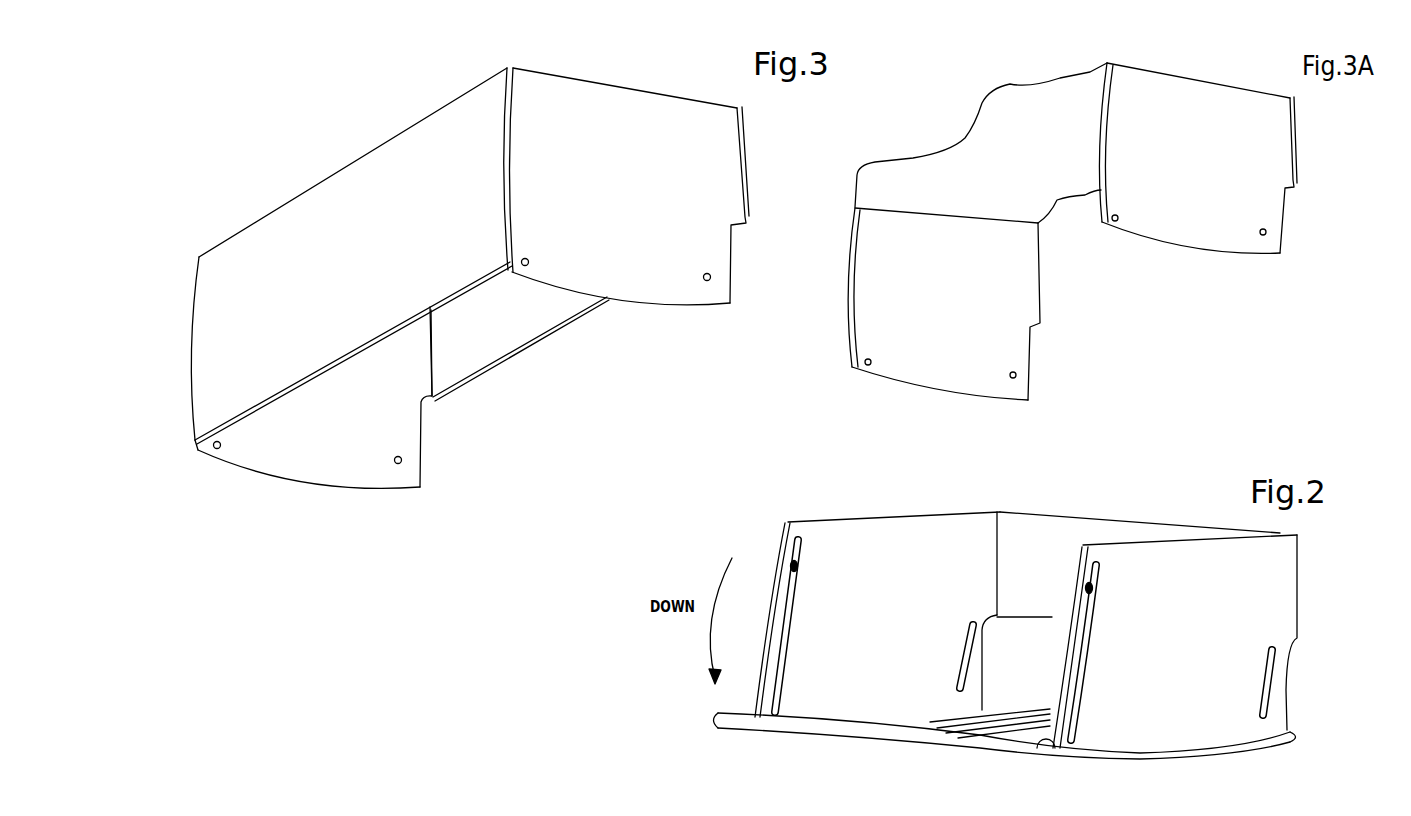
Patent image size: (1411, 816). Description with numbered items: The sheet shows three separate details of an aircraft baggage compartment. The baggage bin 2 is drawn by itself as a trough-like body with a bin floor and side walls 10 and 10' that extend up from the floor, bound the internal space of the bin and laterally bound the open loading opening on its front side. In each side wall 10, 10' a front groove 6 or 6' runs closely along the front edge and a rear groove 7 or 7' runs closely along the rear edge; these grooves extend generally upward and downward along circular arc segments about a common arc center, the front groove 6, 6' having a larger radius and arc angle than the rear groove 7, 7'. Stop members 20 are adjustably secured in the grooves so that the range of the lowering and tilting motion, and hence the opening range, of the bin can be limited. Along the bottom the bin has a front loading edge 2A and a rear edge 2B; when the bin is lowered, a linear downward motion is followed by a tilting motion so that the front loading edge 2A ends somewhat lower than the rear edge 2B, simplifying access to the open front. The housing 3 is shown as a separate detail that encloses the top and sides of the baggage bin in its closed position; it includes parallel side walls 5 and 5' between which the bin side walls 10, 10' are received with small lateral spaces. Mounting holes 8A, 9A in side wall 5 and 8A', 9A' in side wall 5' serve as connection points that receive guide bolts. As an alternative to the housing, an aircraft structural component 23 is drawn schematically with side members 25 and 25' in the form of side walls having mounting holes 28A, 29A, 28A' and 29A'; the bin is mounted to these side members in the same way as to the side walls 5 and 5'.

In FIG. 2, the baggage bin 2 is at (1138, 585).
In FIG. 2, the front loading edge 2A is at (937, 738).
In FIG. 2, the rear edge 2B is at (1293, 732).
In FIG. 3, the housing 3 is at (387, 178).
In FIG. 3, the side wall 5 is at (313, 399).
In FIG. 3, the side wall 5' is at (626, 186).
In FIG. 2, the front groove 6 is at (756, 592).
In FIG. 2, the front groove 6' is at (1098, 674).
In FIG. 2, the rear groove 7 is at (958, 549).
In FIG. 2, the rear groove 7' is at (1298, 722).
In FIG. 3, the mounting hole 8A is at (226, 489).
In FIG. 3, the mounting hole 8A' is at (569, 325).
In FIG. 3, the mounting hole 9A is at (439, 499).
In FIG. 3, the mounting hole 9A' is at (748, 324).
In FIG. 2, the side wall 10 is at (894, 571).
In FIG. 2, the side wall 10' is at (1190, 632).
In FIG. 2, the stop member 20 is at (797, 562).
In FIG. 3A, the aircraft structural component 23 is at (950, 190).
In FIG. 3A, the side member 25 is at (944, 304).
In FIG. 3A, the side member 25' is at (1198, 158).
In FIG. 3A, the mounting hole 28A is at (877, 395).
In FIG. 3A, the mounting hole 28A' is at (1152, 271).
In FIG. 3A, the mounting hole 29A is at (1047, 407).
In FIG. 3A, the mounting hole 29A' is at (1297, 270).